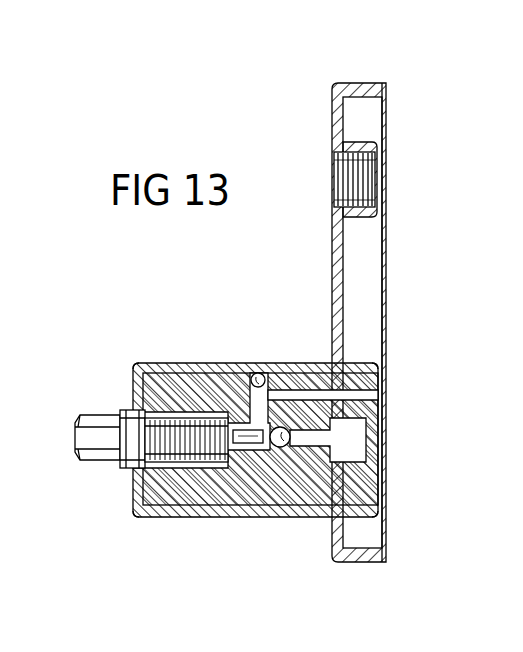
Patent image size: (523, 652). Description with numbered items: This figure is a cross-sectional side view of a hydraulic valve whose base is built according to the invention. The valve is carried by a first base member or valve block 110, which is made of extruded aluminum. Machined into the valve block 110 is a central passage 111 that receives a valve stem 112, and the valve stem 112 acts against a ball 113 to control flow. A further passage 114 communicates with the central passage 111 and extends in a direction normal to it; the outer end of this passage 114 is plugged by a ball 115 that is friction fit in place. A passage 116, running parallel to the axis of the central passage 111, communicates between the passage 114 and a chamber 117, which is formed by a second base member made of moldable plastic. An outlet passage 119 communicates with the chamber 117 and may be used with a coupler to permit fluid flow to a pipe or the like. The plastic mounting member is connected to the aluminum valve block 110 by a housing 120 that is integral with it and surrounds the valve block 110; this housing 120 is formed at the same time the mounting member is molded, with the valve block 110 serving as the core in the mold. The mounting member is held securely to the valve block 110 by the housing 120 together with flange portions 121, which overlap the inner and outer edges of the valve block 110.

The first base member or valve block 110 is at (320, 487).
The central passage 111 is at (350, 454).
The valve stem 112 is at (175, 517).
The ball 113 is at (280, 448).
The passage 114 is at (232, 390).
The ball 115 is at (254, 388).
The passage 116 is at (343, 391).
The chamber 117 is at (343, 258).
The outlet passage 119 is at (350, 160).
The housing 120 is at (231, 519).
The flange portions 121 is at (135, 393).